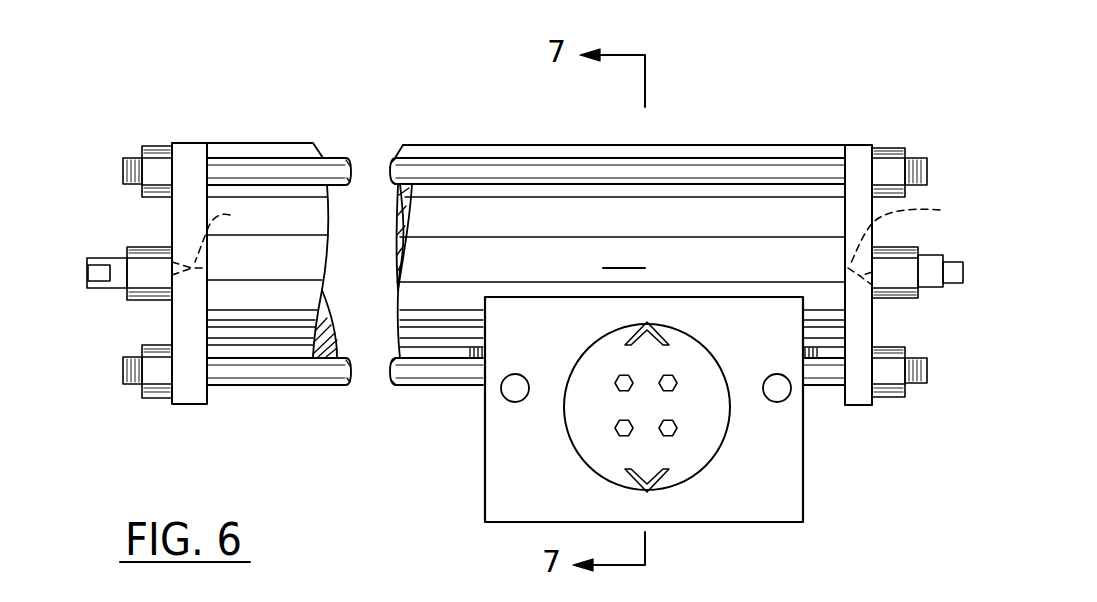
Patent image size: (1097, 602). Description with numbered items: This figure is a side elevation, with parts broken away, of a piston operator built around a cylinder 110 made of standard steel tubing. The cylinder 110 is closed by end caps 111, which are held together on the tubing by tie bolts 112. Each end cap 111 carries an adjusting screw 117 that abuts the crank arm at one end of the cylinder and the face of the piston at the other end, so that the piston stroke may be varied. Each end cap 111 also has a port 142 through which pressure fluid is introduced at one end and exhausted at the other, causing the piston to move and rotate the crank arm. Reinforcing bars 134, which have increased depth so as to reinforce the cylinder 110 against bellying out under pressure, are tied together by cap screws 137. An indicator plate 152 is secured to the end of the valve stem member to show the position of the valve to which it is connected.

The cylinder 110 is at (526, 250).
The end cap 111 is at (187, 153).
The tie bolt 112 is at (328, 163).
The adjusting screw 117 is at (120, 262).
The reinforcing bar 134 is at (795, 465).
The cap screw 137 is at (513, 395).
The port 142 is at (578, 240).
The indicator plate 152 is at (688, 455).